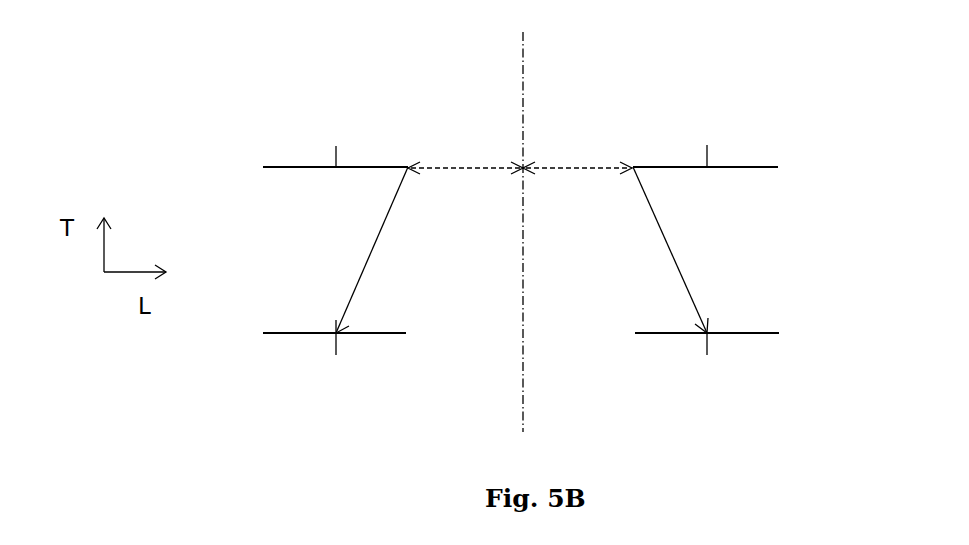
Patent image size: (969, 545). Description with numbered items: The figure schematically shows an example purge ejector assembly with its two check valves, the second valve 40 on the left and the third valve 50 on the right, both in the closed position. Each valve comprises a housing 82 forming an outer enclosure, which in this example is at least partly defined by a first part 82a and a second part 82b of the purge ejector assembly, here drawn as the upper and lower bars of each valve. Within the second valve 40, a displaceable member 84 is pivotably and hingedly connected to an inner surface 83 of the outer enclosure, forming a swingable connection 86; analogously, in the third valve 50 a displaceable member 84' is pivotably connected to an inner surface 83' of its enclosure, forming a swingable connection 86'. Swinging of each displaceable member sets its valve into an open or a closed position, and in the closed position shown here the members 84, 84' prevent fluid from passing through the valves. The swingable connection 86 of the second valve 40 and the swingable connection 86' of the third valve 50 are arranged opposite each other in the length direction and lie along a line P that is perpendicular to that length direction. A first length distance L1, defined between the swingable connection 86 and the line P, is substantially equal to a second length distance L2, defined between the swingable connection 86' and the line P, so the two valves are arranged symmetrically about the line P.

The second valve 40 is at (203, 113).
The third valve 50 is at (792, 113).
The housing 82 is at (493, 240).
The first part of the purge ejector assembly 82a is at (286, 160).
The second part of the purge ejector assembly 82b is at (285, 343).
The inner surface 83 is at (266, 209).
The inner surface 83' is at (794, 208).
The displaceable member 84 is at (393, 250).
The displaceable member 84' is at (660, 250).
The swingable connection 86 is at (432, 119).
The swingable connection 86' is at (615, 130).
The line P is at (521, 216).
The first length distance L1 is at (465, 183).
The second length distance L2 is at (577, 183).